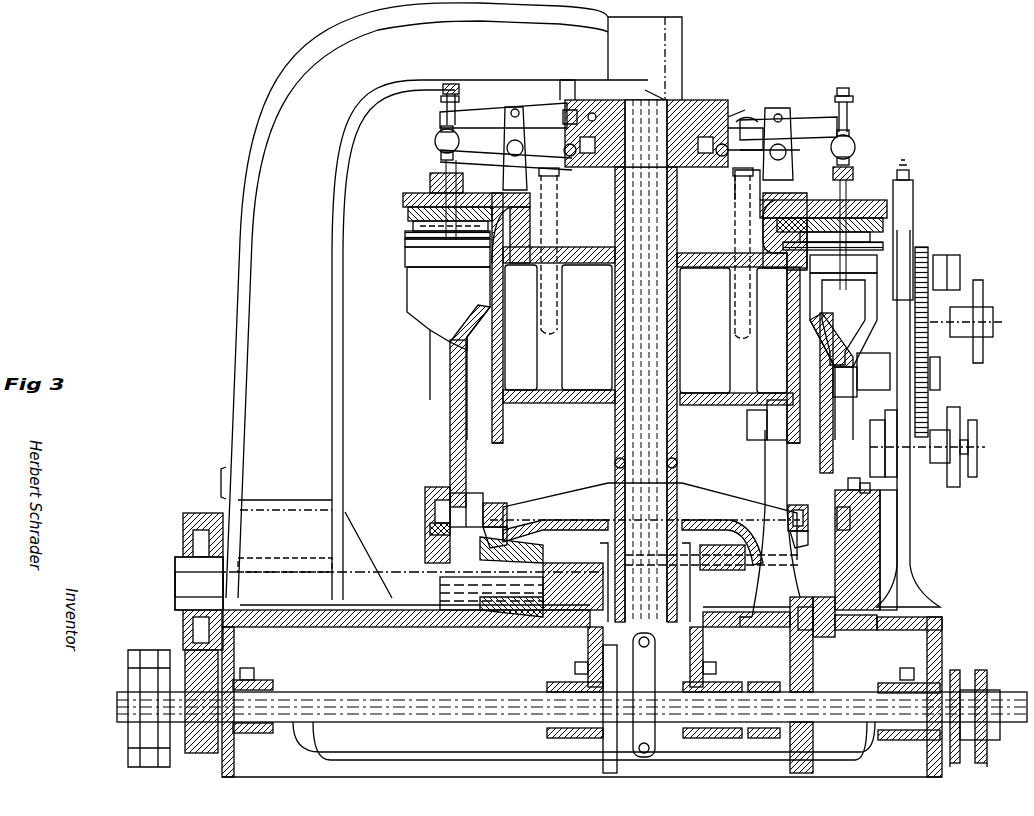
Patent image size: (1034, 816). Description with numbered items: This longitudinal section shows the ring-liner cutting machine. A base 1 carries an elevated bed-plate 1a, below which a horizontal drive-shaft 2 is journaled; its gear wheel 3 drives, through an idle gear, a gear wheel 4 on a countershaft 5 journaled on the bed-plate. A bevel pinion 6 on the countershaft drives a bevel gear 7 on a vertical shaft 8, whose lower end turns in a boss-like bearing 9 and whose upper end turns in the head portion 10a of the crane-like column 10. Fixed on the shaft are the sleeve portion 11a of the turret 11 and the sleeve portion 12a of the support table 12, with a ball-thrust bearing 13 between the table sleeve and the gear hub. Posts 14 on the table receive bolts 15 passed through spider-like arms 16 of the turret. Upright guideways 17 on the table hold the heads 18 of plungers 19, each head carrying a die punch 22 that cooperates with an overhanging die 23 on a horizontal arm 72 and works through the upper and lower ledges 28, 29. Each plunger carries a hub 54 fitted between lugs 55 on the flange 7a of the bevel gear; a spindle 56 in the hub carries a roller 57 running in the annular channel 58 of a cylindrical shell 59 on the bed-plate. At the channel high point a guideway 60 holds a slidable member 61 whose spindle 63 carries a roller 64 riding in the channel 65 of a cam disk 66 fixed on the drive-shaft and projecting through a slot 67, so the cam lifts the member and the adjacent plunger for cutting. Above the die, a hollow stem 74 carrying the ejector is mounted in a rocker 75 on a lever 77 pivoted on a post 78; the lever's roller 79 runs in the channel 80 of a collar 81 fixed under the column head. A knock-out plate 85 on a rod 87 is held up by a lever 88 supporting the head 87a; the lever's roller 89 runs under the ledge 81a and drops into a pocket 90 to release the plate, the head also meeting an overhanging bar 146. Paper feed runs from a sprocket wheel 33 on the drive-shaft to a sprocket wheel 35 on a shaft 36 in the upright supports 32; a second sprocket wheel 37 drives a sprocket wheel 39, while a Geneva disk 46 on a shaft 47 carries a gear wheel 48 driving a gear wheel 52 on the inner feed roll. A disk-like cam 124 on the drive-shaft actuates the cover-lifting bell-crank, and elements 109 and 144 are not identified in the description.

The base 1 is at (942, 650).
The bed-plate 1a is at (380, 628).
The drive-shaft 2 is at (572, 719).
The gear wheel 3 is at (198, 745).
The gear wheel 4 is at (190, 543).
The countershaft 5 is at (470, 595).
The bevel pinion 6 is at (505, 607).
The bevel gear 7 is at (720, 566).
The upright peripheral flange 7a is at (512, 502).
The vertical shaft 8 is at (625, 425).
The boss-like bearing 9 is at (677, 598).
The supporting column 10 is at (250, 228).
The head portion 10a is at (683, 45).
The turret 11 is at (553, 318).
The central sleeve portion 11a is at (680, 206).
The support table 12 is at (575, 403).
The sleeve portion 12a is at (677, 330).
The ball-thrust bearing 13 is at (614, 465).
The posts 14 is at (554, 353).
The vertical bolts 15 is at (545, 220).
The spider-like arms 16 is at (820, 190).
The upright guideways 17 is at (500, 400).
The plunger head 18 is at (405, 302).
The plunger 19 is at (450, 441).
The die punch 22 is at (407, 265).
The overhanging die 23 is at (413, 226).
The upper ledge 28 is at (405, 237).
The lower ledge 29 is at (405, 256).
The upright supports 32 is at (775, 485).
The sprocket wheel 33 is at (963, 765).
The sprocket wheel 35 is at (952, 490).
The shaft 36 is at (922, 455).
The second sprocket wheel 37 is at (968, 470).
The sprocket wheel 39 is at (978, 345).
The radially slotted disk 46 is at (845, 410).
The shaft 47 is at (925, 390).
The gear wheel 48 is at (928, 365).
The gear wheel 52 is at (960, 266).
The hub 54 is at (492, 530).
The lugs 55 is at (800, 558).
The spindle 56 is at (478, 495).
The antifriction roller 57 is at (434, 505).
The annular channel 58 is at (440, 487).
The cylindrical shell 59 is at (430, 521).
The guideway 60 is at (880, 520).
The slidable member 61 is at (872, 572).
The spindle 63 is at (848, 628).
The antifriction roller 64 is at (790, 625).
The circular channel 65 is at (800, 640).
The cam disk 66 is at (813, 670).
The slot 67 is at (780, 617).
The horizontal arm 72 is at (428, 195).
The hollow stem 74 is at (410, 194).
The rocker 75 is at (435, 134).
The lever 77 is at (440, 150).
The post 78 is at (530, 130).
The anti-friction roller 79 is at (572, 160).
The channel 80 is at (590, 160).
The collar 81 is at (688, 100).
The overhanging ledge 81a is at (574, 75).
The knock-out plate 85 is at (843, 322).
The rod 87 is at (460, 182).
The head 87a is at (440, 99).
The lever 88 is at (515, 113).
The antifriction roller 89 is at (566, 124).
The pocket 90 is at (730, 105).
The link 109 is at (655, 660).
The disk-like cam 124 is at (600, 655).
The pulley 144 is at (978, 690).
The bar 146 is at (450, 84).